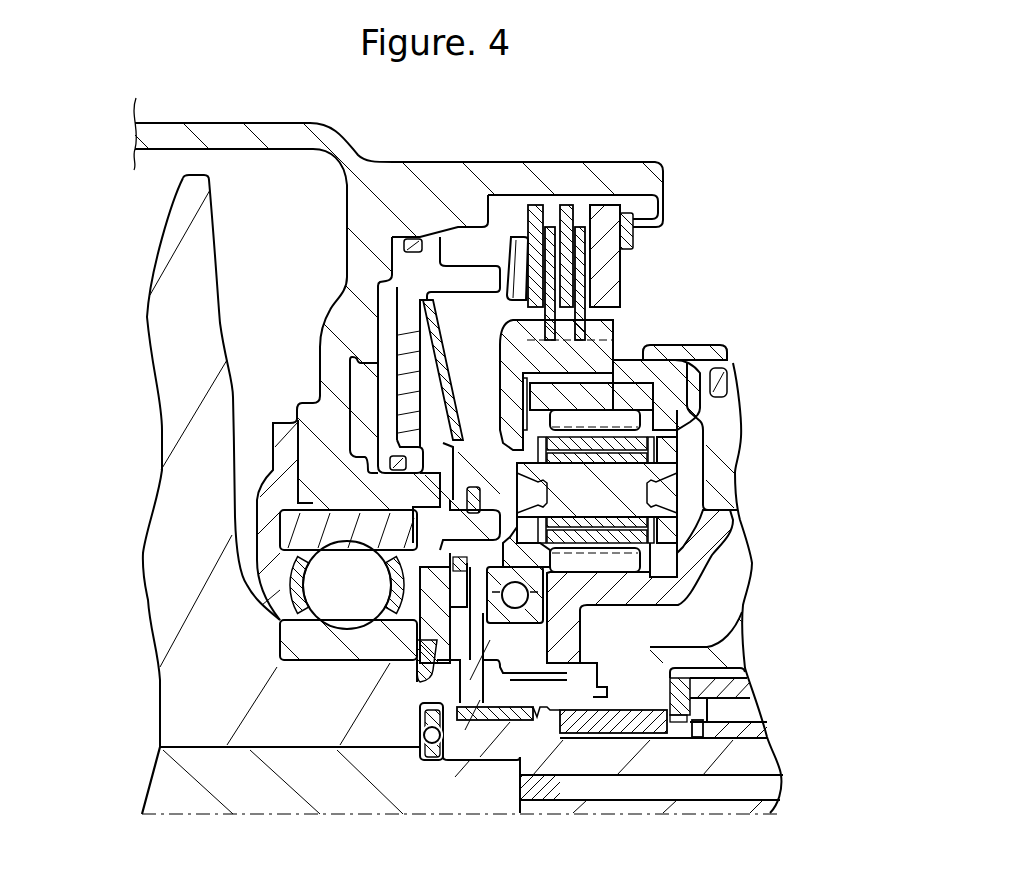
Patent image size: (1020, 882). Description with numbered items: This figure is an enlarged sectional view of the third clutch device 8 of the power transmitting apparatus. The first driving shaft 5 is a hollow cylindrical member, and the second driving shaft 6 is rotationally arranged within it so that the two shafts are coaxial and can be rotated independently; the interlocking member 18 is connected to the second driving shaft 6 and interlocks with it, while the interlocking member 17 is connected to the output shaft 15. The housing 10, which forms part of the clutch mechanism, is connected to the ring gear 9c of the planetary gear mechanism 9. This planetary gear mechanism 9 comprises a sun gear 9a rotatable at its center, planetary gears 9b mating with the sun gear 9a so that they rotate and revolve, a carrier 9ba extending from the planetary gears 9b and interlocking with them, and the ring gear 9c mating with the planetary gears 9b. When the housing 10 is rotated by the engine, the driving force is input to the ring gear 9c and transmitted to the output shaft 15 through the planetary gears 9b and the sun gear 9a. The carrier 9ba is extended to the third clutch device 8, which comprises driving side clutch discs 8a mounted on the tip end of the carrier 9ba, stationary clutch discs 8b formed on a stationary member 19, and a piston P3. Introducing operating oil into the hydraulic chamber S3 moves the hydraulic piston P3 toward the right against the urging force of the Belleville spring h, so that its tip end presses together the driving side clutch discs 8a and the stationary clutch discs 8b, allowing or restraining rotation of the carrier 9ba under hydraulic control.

The stationary member 19 is at (403, 175).
The stationary clutch discs 8b is at (533, 207).
The driving side clutch discs 8a is at (550, 228).
The third clutch device 8 is at (618, 223).
The housing 10 is at (703, 352).
The carrier 9ba is at (607, 328).
The ring gear 9c is at (660, 412).
The planetary gears 9b is at (660, 440).
The planetary gear mechanism 9 is at (665, 483).
The sun gear 9a is at (640, 586).
The interlocking member 18 is at (737, 652).
The first driving shaft 5 is at (753, 705).
The second driving shaft 6 is at (770, 758).
The interlocking member 17 is at (525, 645).
The output shaft 15 is at (163, 780).
The piston P3 is at (407, 263).
The hydraulic chamber S3 is at (383, 310).
The Belleville spring h is at (433, 352).